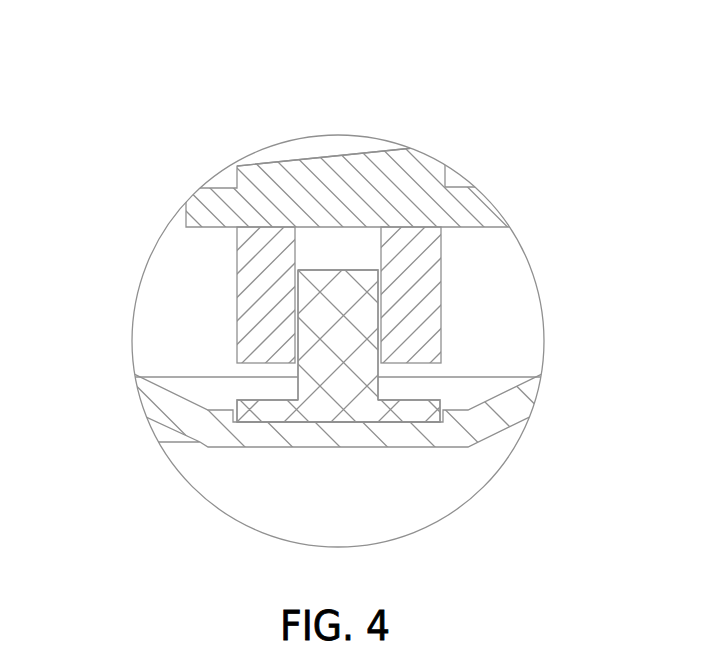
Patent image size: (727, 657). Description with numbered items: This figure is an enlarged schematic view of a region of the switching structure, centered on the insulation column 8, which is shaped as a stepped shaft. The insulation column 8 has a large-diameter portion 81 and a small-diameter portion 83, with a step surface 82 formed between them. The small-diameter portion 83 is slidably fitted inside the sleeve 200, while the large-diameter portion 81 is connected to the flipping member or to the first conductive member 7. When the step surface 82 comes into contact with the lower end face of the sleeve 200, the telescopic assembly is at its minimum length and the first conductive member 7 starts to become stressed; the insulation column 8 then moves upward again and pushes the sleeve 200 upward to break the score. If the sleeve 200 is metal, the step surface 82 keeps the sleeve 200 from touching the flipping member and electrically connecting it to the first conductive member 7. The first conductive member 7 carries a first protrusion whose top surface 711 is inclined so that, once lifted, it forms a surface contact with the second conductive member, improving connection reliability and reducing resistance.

The first conductive member 7 is at (458, 182).
The top surface 711 is at (329, 157).
The small-diameter portion 83 is at (310, 294).
The sleeve 200 is at (436, 297).
The step surface 82 is at (267, 397).
The insulation column 8 is at (390, 392).
The large-diameter portion 81 is at (415, 413).